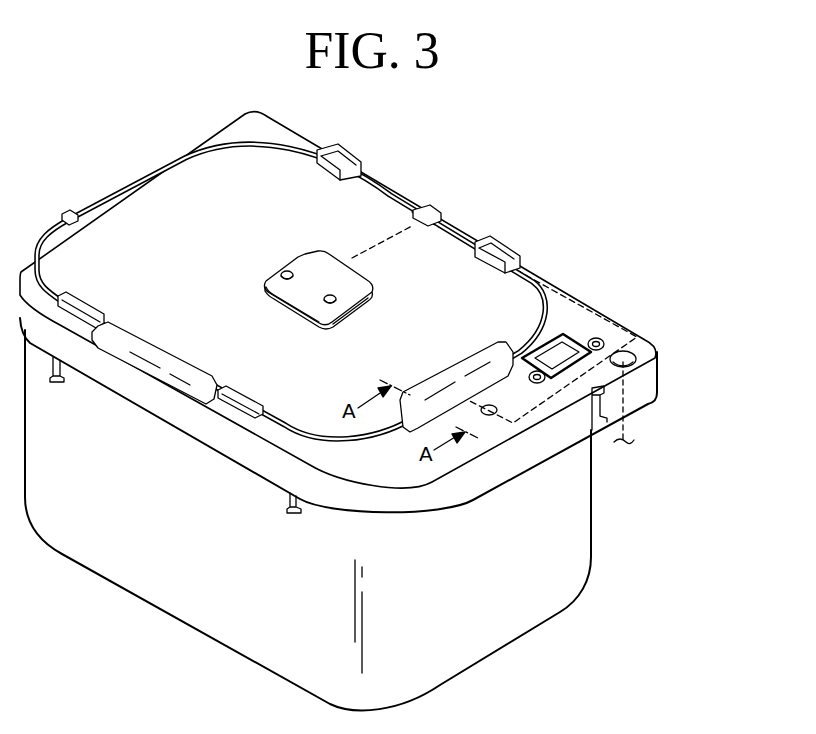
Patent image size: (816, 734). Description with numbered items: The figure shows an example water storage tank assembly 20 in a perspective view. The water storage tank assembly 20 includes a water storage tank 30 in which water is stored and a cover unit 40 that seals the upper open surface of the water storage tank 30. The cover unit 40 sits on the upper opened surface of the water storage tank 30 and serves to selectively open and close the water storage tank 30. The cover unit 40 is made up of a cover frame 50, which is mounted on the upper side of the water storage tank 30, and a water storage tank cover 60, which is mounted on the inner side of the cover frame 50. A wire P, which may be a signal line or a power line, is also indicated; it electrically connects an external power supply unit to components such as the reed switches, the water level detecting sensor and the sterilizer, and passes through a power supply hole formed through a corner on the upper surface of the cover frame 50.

The water storage tank assembly 20 is at (399, 411).
The water storage tank 30 is at (562, 490).
The cover unit 40 is at (380, 312).
The cover frame 50 is at (634, 321).
The water storage tank cover 60 is at (536, 285).
The wire P is at (627, 428).